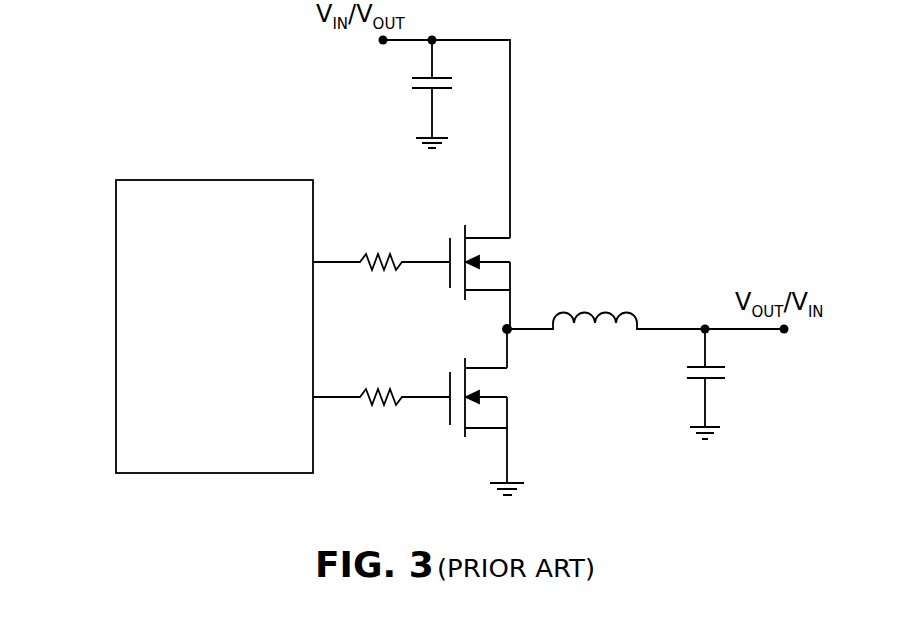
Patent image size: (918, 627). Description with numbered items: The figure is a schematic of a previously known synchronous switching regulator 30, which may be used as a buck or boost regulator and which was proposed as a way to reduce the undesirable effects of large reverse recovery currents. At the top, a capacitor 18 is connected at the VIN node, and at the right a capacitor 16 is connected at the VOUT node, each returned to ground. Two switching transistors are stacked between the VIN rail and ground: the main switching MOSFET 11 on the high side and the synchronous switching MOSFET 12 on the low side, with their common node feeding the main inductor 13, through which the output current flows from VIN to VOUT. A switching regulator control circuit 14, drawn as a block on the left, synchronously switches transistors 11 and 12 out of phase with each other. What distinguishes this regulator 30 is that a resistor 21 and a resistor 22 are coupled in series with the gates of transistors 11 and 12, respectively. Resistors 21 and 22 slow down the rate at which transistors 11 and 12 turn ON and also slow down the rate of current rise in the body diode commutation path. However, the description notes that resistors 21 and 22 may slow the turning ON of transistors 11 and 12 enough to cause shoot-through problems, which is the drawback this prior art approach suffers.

The synchronous switching regulator 30 is at (688, 77).
The capacitor 18 is at (443, 78).
The switching regulator control circuit 14 is at (206, 180).
The resistor 21 is at (370, 268).
The resistor 22 is at (370, 403).
The main switching MOSFET 11 is at (510, 262).
The synchronous switching MOSFET 12 is at (507, 410).
The main inductor 13 is at (570, 318).
The capacitor 16 is at (693, 378).